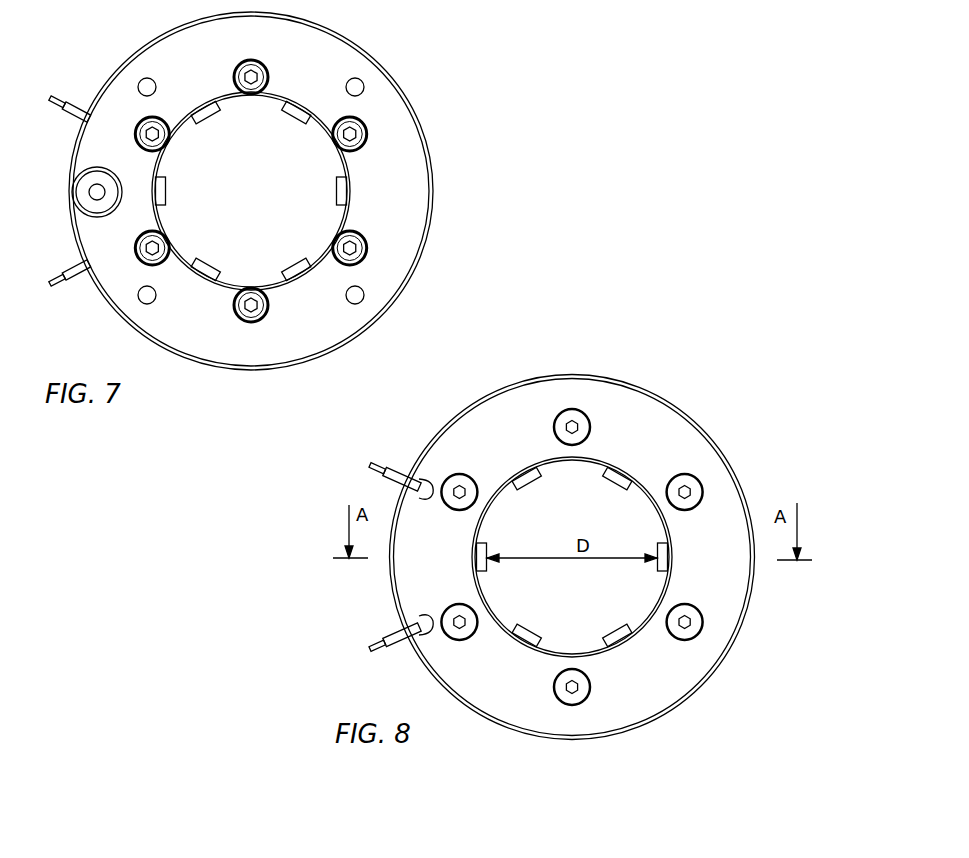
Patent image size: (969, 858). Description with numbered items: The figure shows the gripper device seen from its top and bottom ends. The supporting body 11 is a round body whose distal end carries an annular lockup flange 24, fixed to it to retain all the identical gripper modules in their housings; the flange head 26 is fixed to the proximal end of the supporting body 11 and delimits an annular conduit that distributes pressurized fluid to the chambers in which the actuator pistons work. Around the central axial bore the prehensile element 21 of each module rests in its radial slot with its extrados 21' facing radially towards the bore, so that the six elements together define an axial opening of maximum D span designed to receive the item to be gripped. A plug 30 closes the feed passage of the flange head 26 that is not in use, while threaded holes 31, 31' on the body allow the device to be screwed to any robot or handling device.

In FIG. 7, the supporting body 11 is at (423, 263).
In FIG. 8, the supporting body 11 is at (695, 423).
In FIG. 7, the prehensile element 21 is at (388, 190).
In FIG. 8, the prehensile element 21 is at (645, 615).
In FIG. 7, the extrados 21' is at (233, 190).
In FIG. 8, the extrados 21' is at (554, 556).
In FIG. 7, the annular lockup flange 24 is at (298, 161).
In FIG. 8, the annular lockup flange 24 is at (505, 418).
In FIG. 7, the flange head 26 is at (392, 105).
In FIG. 7, the plug 30 is at (88, 200).
In FIG. 7, the threaded hole 31 is at (122, 165).
In FIG. 7, the threaded hole 31' is at (398, 205).